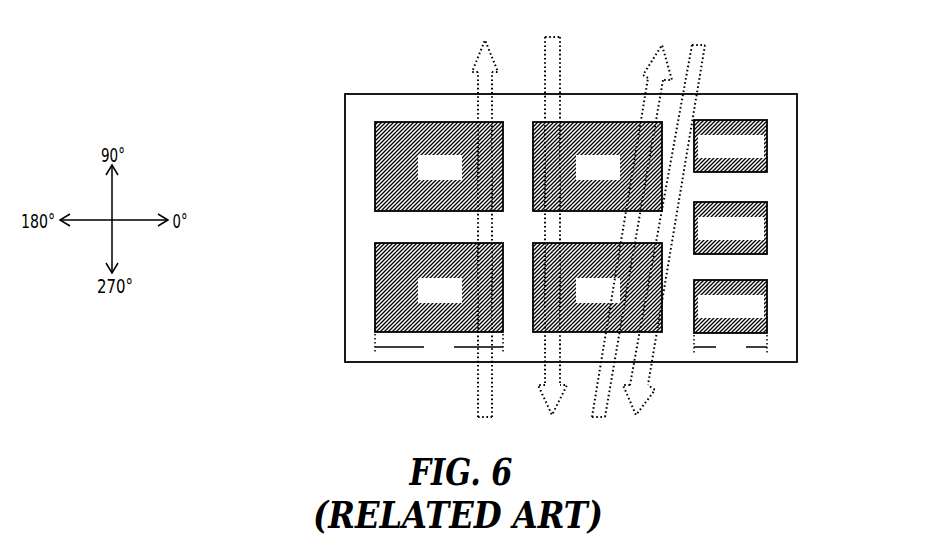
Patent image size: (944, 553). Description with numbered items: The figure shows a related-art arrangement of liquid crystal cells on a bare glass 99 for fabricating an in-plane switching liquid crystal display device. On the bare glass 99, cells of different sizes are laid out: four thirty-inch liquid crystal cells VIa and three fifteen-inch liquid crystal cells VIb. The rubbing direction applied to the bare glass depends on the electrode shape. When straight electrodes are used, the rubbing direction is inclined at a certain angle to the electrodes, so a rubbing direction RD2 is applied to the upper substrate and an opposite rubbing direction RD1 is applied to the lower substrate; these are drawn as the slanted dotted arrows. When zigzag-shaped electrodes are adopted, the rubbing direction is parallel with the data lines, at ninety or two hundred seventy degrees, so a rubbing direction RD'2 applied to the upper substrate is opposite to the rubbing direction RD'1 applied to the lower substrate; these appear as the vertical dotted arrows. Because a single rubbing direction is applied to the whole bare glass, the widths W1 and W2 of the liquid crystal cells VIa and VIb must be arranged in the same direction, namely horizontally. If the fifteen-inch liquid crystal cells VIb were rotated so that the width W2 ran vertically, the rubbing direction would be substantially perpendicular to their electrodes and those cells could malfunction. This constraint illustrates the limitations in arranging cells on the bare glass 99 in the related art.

The bare glass 99 is at (753, 94).
The 30 inches liquid crystal cells VIa is at (533, 167).
The 15 inches liquid crystal cells VIb is at (767, 152).
The rubbing direction RD1 is at (634, 218).
The rubbing direction RD'1 is at (484, 214).
The rubbing direction RD2 is at (661, 245).
The rubbing direction RD'2 is at (553, 241).
The width W1 is at (439, 346).
The width W2 is at (730, 346).